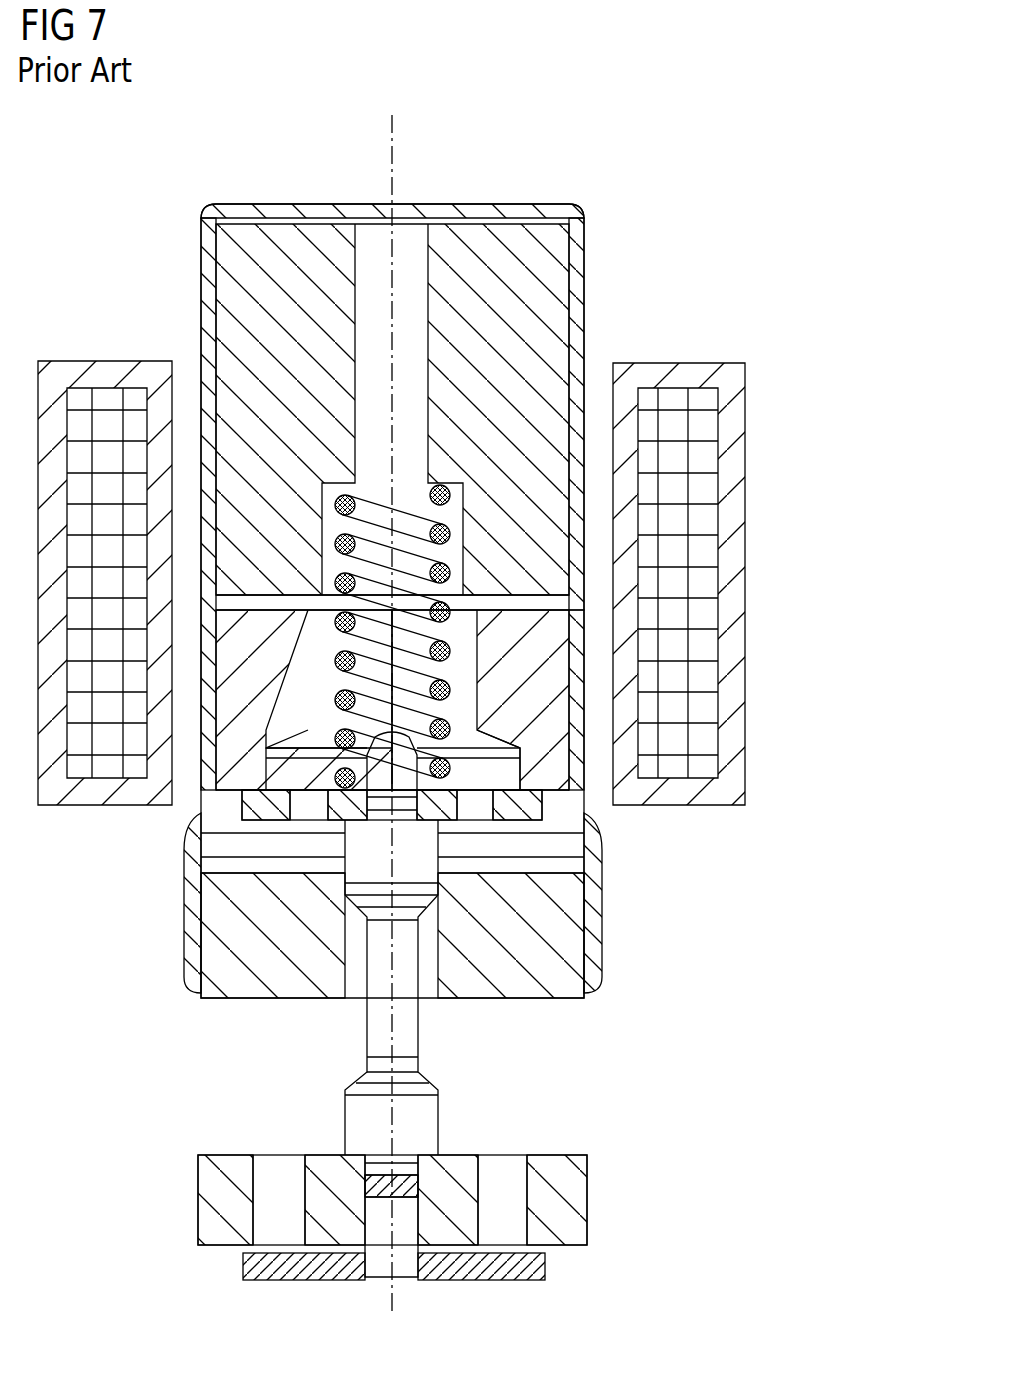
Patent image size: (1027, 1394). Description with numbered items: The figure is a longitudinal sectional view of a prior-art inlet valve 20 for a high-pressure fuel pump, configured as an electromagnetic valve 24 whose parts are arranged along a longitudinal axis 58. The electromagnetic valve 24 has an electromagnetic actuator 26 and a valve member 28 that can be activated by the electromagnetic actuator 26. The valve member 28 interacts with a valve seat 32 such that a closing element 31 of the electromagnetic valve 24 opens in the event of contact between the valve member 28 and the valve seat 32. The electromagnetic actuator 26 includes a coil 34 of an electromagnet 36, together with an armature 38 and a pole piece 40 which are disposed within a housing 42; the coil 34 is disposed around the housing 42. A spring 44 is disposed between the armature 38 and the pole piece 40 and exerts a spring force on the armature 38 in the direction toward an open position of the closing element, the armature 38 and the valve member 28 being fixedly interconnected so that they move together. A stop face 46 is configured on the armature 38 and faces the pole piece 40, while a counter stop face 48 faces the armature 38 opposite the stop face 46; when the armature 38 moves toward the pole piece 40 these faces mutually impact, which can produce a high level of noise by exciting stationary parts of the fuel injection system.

The inlet valve 20 is at (479, 579).
The electromagnetic valve 24 is at (643, 204).
The electromagnetic actuator 26 is at (765, 410).
The valve member 28 is at (410, 1110).
The closing element 31 is at (545, 1277).
The valve seat 32 is at (545, 1202).
The coil 34 is at (467, 583).
The electromagnet 36 is at (677, 460).
The armature 38 is at (520, 670).
The pole piece 40 is at (527, 290).
The housing 42 is at (284, 205).
The spring 44 is at (457, 532).
The stop face 46 is at (523, 603).
The counter stop face 48 is at (568, 632).
The longitudinal axis 58 is at (398, 117).